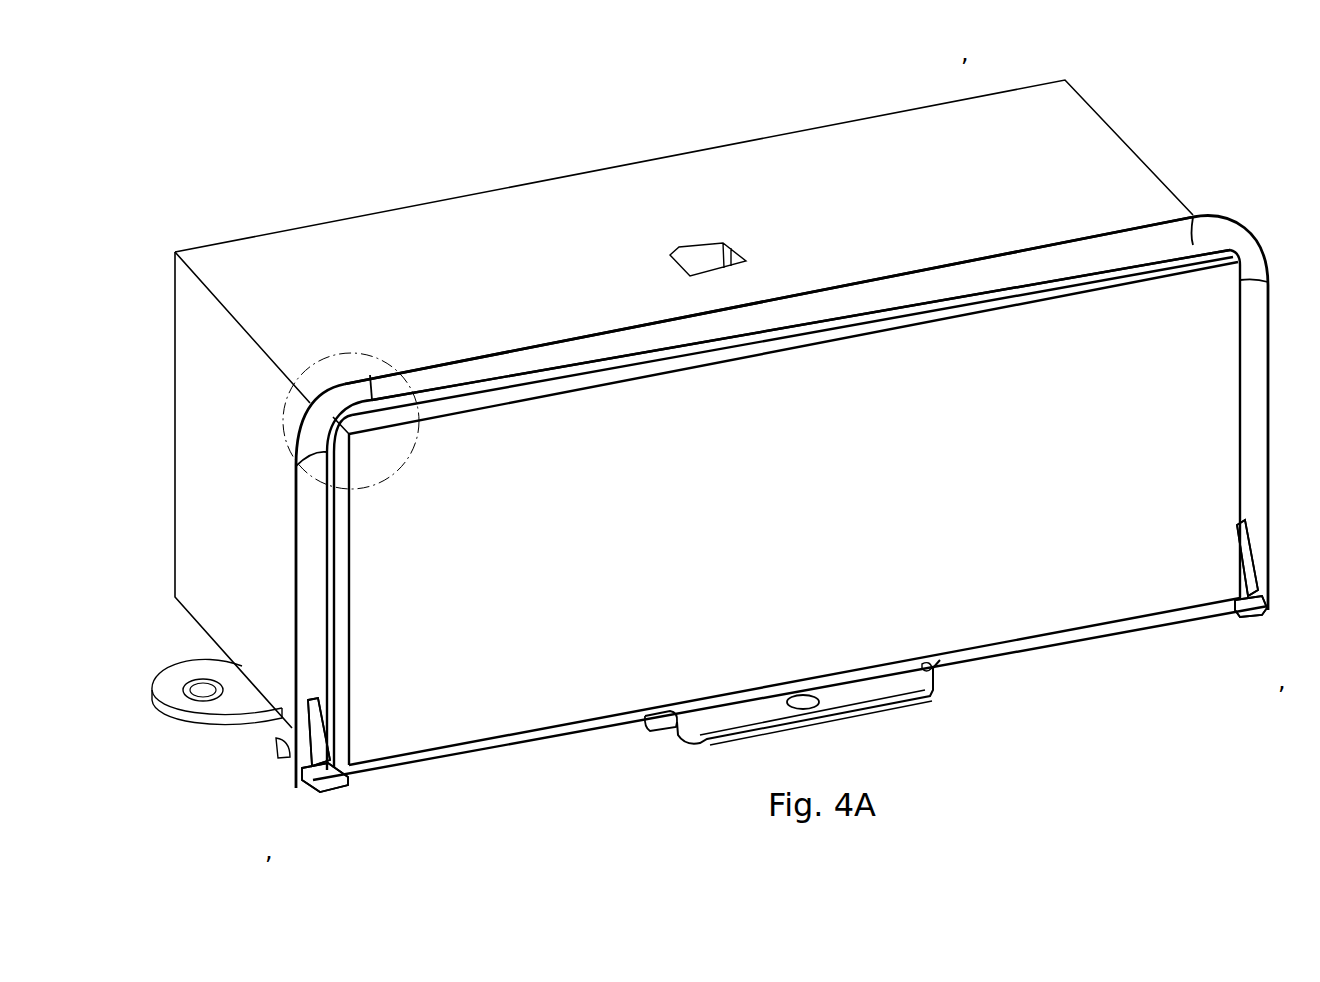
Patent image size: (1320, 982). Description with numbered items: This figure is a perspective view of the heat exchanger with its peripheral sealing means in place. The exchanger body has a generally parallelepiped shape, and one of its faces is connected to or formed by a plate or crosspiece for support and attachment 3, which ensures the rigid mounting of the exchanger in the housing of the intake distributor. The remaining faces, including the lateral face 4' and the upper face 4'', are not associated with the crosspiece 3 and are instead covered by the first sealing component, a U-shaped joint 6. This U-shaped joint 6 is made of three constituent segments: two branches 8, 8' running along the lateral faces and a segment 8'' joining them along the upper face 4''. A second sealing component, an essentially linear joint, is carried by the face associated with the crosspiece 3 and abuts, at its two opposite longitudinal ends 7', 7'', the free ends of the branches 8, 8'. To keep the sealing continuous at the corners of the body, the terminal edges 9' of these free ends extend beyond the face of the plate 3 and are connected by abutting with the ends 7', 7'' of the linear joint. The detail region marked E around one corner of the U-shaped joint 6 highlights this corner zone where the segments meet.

The plate or crosspiece for support and attachment 3 is at (585, 735).
The lateral face 4' is at (201, 490).
The upper face 4'' is at (684, 257).
The U-shaped joint 6 is at (787, 219).
The longitudinal end of linear joint 7' is at (312, 781).
The longitudinal end of linear joint 7'' is at (1276, 607).
The branch of U-shaped joint 8 is at (692, 581).
The branch of U-shaped joint 8' is at (1248, 413).
The constituent segment of U-shaped joint 8'' is at (791, 236).
The terminal edge of free end 9' is at (760, 692).
The detail region E is at (359, 354).